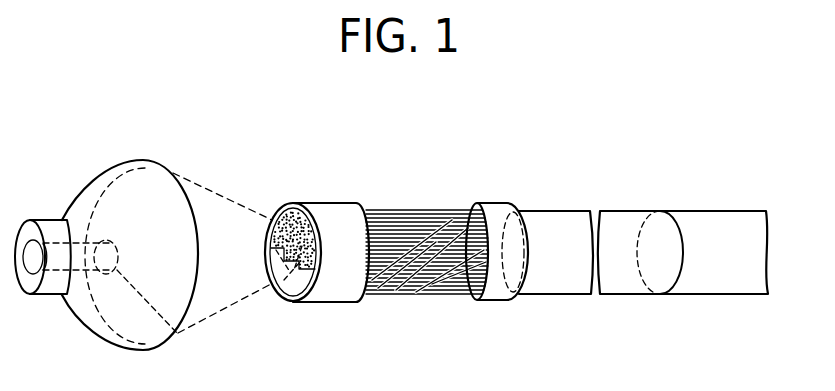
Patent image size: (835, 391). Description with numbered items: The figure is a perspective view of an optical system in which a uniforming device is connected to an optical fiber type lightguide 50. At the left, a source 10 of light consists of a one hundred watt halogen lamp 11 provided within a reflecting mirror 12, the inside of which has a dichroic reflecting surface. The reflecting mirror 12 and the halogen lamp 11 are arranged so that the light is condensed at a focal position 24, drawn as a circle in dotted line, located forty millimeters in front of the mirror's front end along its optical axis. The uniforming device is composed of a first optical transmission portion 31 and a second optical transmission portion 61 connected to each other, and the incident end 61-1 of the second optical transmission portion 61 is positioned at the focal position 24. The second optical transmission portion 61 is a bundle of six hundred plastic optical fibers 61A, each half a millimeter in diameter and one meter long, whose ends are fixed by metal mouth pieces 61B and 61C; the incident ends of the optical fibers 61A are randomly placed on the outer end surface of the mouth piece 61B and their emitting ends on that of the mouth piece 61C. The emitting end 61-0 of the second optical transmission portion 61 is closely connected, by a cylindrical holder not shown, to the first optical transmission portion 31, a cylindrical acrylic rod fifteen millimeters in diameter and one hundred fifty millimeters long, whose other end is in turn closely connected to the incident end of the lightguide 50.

The source of light 10 is at (153, 160).
The halogen lamp 11 is at (178, 333).
The reflecting mirror 12 is at (100, 177).
The focal position 24 is at (296, 302).
The first optical transmission portion 31 is at (613, 297).
The lightguide 50 is at (723, 297).
The second optical transmission portion 61 is at (387, 250).
The incident end 61-1 is at (276, 198).
The optical fibers 61A is at (380, 297).
The mouth piece 61B is at (328, 303).
The mouth piece 61C is at (492, 303).
The emitting end 61-0 is at (528, 297).